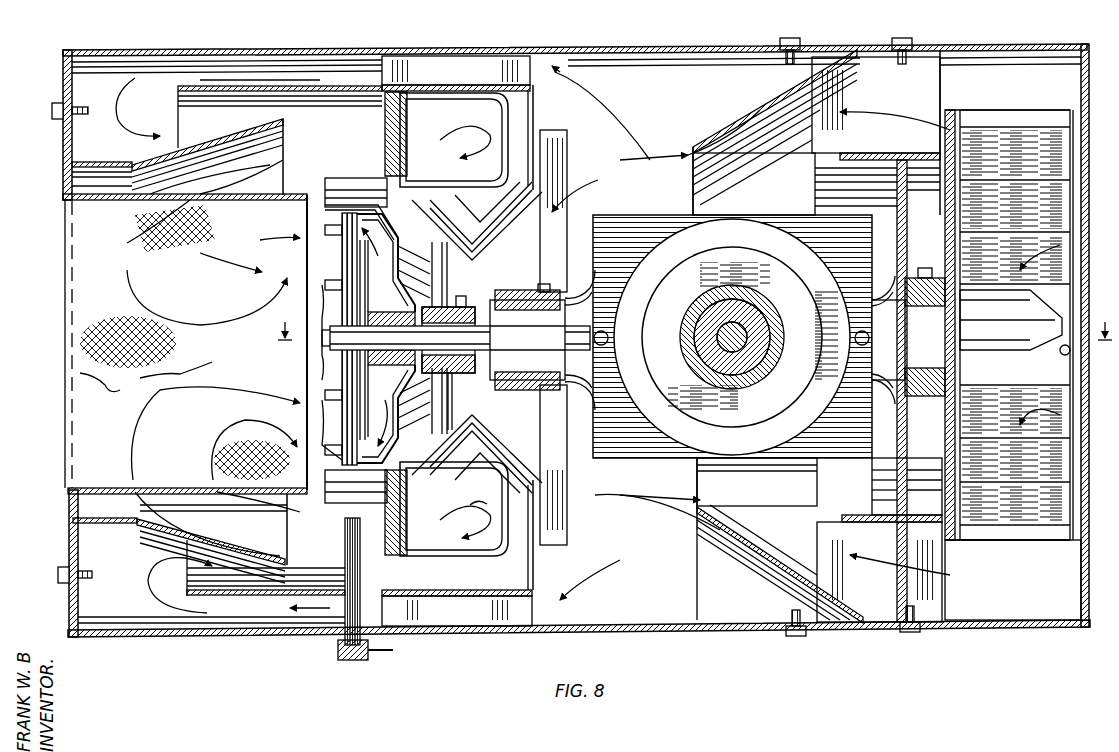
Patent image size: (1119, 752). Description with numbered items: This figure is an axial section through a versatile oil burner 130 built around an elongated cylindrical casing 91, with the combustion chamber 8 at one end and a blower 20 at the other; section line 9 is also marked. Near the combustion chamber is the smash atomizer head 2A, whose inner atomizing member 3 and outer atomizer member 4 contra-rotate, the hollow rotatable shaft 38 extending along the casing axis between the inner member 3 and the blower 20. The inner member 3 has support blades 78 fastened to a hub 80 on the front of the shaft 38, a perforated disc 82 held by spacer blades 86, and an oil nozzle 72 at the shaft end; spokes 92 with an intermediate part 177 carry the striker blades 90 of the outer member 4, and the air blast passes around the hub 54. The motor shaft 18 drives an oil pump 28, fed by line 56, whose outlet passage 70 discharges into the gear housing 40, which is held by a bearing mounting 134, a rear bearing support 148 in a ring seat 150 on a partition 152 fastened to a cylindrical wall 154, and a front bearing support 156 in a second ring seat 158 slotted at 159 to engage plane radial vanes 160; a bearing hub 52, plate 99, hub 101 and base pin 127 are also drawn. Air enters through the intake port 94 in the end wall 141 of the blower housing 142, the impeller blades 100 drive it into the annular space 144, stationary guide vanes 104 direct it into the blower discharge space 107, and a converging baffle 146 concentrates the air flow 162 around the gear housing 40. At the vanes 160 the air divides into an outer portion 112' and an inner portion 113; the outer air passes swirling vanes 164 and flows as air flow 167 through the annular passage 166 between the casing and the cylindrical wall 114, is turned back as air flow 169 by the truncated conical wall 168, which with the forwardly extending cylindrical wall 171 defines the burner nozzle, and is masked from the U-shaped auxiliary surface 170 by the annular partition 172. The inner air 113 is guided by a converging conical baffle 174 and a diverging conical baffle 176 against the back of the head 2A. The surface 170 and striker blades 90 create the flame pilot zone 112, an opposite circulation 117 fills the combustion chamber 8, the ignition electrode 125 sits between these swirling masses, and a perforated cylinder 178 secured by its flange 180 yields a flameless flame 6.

The smash atomizer head 2A is at (280, 226).
The inner atomizing member 3 is at (280, 246).
The outer atomizer member 4 is at (350, 170).
The flame 6 is at (185, 342).
The combustion chamber 8 is at (33, 328).
The section line 9 is at (695, 342).
The motor shaft 18 is at (748, 337).
The blower 20 is at (1022, 118).
The oil pump 28 is at (622, 280).
The hollow rotatable shaft 38 is at (402, 414).
The gear housing 40 is at (640, 212).
The bearing hub 52 is at (460, 340).
The hub 54 is at (470, 296).
The oil supply line 56 is at (862, 330).
The outlet passage 70 is at (598, 335).
The nozzle 72 is at (326, 330).
The support blades 78 is at (402, 263).
The hub 80 is at (391, 327).
The perforated disc 82 is at (347, 252).
The spacer blades 86 is at (345, 440).
The striker blades 90 is at (350, 503).
The casing 91 is at (588, 50).
The spokes 92 is at (455, 408).
The intake port 94 is at (1080, 456).
The fan plate 99 is at (960, 128).
The impeller blades 100 is at (1035, 138).
The fan hub 101 is at (1066, 356).
The stationary guide vanes 104 is at (945, 650).
The blower discharge space 107 is at (780, 552).
The flame pilot zone 112 is at (454, 324).
The outer concentric air portion 112' is at (601, 333).
The inner concentric air portion 113 is at (590, 176).
The cylindrical wall 114 is at (180, 582).
The circulation 117 is at (240, 275).
The ignition electrode 125 is at (345, 550).
The base pin 127 is at (382, 660).
The oil burner 130 is at (302, 680).
The bearing mounting 134 is at (700, 336).
The end wall 141 is at (1085, 622).
The blower housing 142 is at (990, 48).
The annular space 144 is at (1013, 580).
The converging baffle 146 is at (708, 548).
The bearing support 148 is at (892, 340).
The ring seat 150 is at (928, 398).
The partition 152 is at (897, 462).
The cylindrical wall 154 is at (858, 150).
The bearing support 156 is at (527, 340).
The second ring seat 158 is at (525, 298).
The slots 159 is at (545, 388).
The plane radial vanes 160 is at (581, 526).
The air flow 162 is at (728, 496).
The swirling vanes 164 is at (450, 62).
The annular passage 166 is at (260, 70).
The air flow 167 is at (295, 73).
The truncated conical wall 168 is at (206, 537).
The air flow 169 is at (122, 122).
The auxiliary surface 170 is at (486, 511).
The forwardly extending cylindrical wall 171 is at (72, 524).
The annular partition 172 is at (536, 560).
The converging conical baffle 174 is at (505, 468).
The diverging conical baffle 176 is at (442, 214).
The intermediate part 177 is at (420, 512).
The perforated cylinder 178 is at (72, 490).
The flange 180 is at (63, 76).